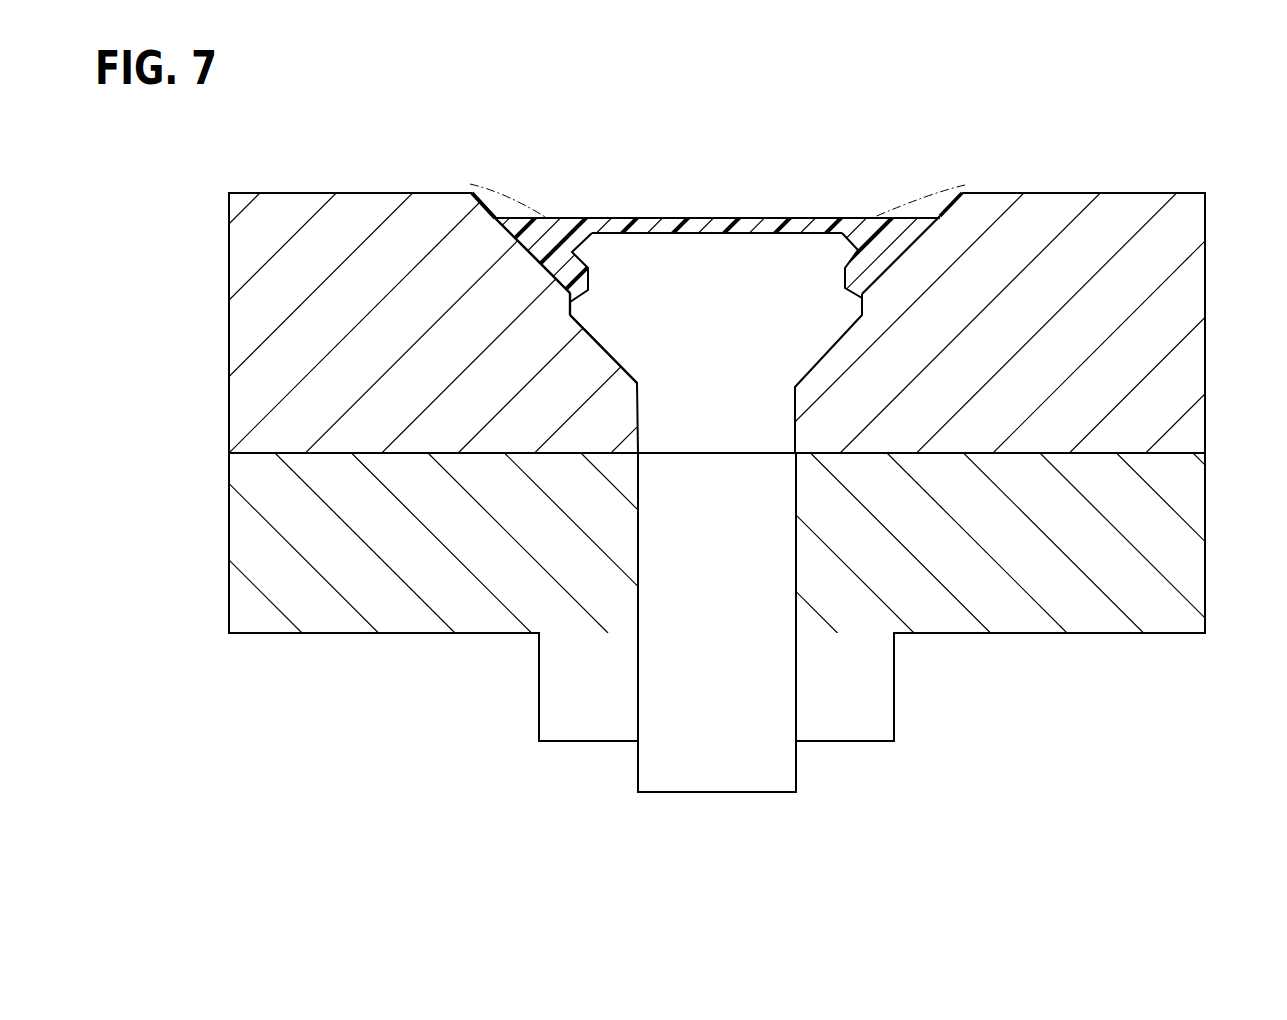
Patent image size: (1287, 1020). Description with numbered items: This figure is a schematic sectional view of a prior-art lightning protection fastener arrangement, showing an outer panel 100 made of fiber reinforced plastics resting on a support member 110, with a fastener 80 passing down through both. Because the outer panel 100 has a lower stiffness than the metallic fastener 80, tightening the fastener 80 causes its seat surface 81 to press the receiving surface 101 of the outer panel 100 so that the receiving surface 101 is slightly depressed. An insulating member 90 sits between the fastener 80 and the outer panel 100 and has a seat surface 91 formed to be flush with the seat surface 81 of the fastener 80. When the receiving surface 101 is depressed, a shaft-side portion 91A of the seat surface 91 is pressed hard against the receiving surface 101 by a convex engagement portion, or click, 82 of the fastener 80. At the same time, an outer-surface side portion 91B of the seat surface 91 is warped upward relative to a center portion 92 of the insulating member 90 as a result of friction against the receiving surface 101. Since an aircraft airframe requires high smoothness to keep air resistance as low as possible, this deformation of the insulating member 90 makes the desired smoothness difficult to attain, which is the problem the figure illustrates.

The fastener 80 is at (651, 232).
The seat surface of the fastener 81 is at (598, 349).
The convex engagement portion (click) 82 is at (716, 222).
The insulating member 90 is at (717, 185).
The seat surface of the insulating member 91 is at (471, 217).
The shaft-side portion of the seat surface 91A is at (562, 283).
The outer-surface side portion of the seat surface 91B is at (463, 196).
The center portion of the insulating member 92 is at (717, 180).
The outer panel 100 is at (1207, 262).
The receiving surface 101 is at (717, 228).
The support member 110 is at (1207, 518).